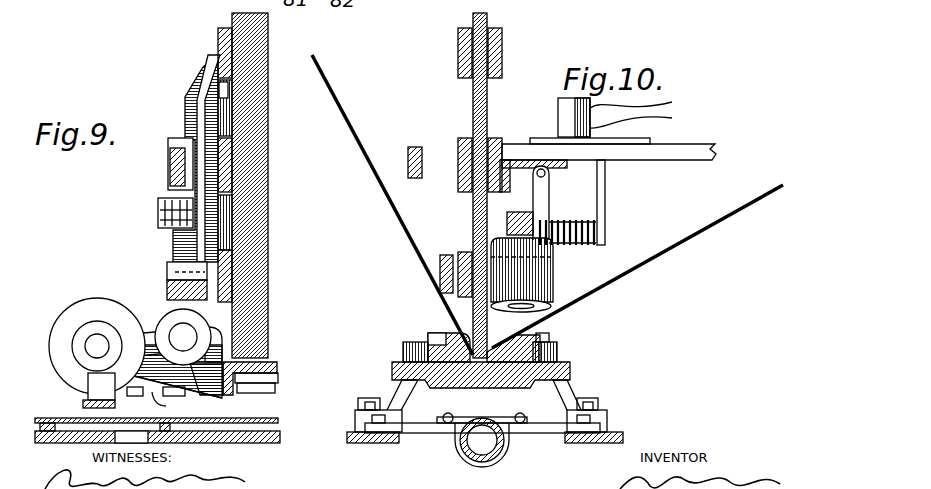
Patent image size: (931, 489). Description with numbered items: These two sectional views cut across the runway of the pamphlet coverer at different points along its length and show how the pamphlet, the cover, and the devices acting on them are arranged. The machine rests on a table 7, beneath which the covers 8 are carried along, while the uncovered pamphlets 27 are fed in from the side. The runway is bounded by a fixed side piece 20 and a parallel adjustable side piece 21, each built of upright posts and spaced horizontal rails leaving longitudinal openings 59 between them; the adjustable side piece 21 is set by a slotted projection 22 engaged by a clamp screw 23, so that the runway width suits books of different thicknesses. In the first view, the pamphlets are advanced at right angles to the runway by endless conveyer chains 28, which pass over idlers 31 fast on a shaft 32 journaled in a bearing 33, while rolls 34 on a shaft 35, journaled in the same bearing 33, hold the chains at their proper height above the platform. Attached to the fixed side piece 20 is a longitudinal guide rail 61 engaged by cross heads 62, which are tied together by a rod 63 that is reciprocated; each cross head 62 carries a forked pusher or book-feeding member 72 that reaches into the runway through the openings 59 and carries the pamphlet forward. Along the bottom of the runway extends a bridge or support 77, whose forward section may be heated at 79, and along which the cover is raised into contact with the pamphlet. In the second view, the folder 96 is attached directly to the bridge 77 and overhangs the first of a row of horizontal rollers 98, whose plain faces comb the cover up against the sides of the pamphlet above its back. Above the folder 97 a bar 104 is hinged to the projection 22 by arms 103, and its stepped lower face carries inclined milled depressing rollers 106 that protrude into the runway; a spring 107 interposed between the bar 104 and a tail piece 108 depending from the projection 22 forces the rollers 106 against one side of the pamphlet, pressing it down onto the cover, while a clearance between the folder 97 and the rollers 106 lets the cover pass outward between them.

In FIG. 9, the table 7 is at (280, 440).
In FIG. 10, the table 7 is at (364, 443).
In FIG. 9, the covers 8 is at (265, 420).
In FIG. 10, the covers 8 is at (404, 238).
In FIG. 9, the fixed side piece 20 is at (228, 62).
In FIG. 10, the fixed side piece 20 is at (458, 60).
In FIG. 10, the adjustable side piece 21 is at (503, 70).
In FIG. 10, the slotted projection 22 is at (610, 152).
In FIG. 10, the clamp screw 23 is at (557, 120).
In FIG. 9, the uncovered pamphlets 27 is at (262, 185).
In FIG. 10, the uncovered pamphlets 27 is at (486, 105).
In FIG. 9, the endless conveyer chains 28 is at (156, 402).
In FIG. 9, the idlers 31 is at (62, 360).
In FIG. 9, the shaft 32 is at (95, 345).
In FIG. 9, the bearing 33 is at (110, 378).
In FIG. 9, the rolls 34 is at (183, 336).
In FIG. 9, the shaft 35 is at (185, 337).
In FIG. 10, the longitudinal openings 59 is at (470, 109).
In FIG. 9, the longitudinal guide rail 61 is at (169, 168).
In FIG. 10, the longitudinal guide rail 61 is at (407, 178).
In FIG. 9, the cross heads 62 is at (170, 188).
In FIG. 9, the rod 63 is at (168, 280).
In FIG. 10, the rod 63 is at (440, 280).
In FIG. 9, the pusher or book-feeding member 72 is at (228, 121).
In FIG. 10, the bridge or support 77 is at (500, 382).
In FIG. 10, the heated forward section 79 is at (462, 457).
In FIG. 10, the folder 96 is at (440, 337).
In FIG. 10, the folder 97 is at (547, 333).
In FIG. 10, the rollers 98 is at (403, 348).
In FIG. 10, the arms 103 is at (549, 199).
In FIG. 10, the bar 104 is at (530, 212).
In FIG. 10, the milled depressing roller 106 is at (549, 278).
In FIG. 10, the spring 107 is at (578, 242).
In FIG. 10, the tail piece 108 is at (606, 200).